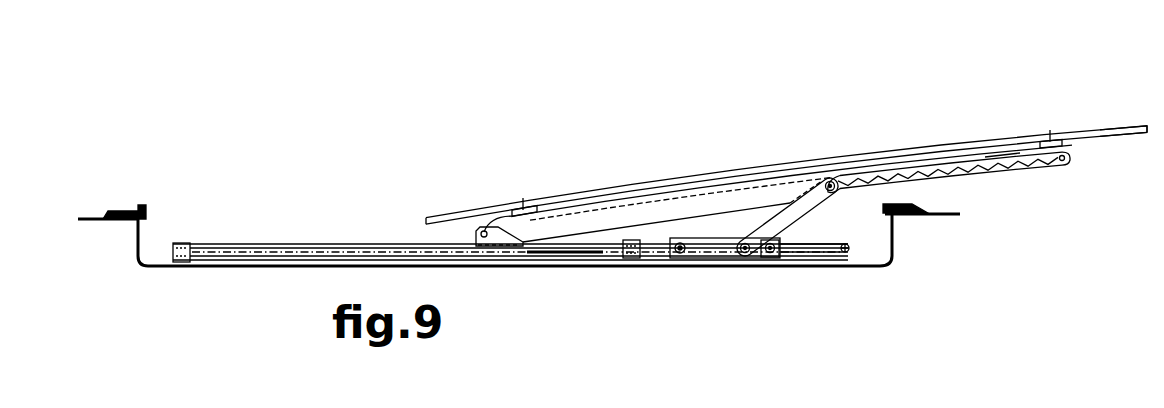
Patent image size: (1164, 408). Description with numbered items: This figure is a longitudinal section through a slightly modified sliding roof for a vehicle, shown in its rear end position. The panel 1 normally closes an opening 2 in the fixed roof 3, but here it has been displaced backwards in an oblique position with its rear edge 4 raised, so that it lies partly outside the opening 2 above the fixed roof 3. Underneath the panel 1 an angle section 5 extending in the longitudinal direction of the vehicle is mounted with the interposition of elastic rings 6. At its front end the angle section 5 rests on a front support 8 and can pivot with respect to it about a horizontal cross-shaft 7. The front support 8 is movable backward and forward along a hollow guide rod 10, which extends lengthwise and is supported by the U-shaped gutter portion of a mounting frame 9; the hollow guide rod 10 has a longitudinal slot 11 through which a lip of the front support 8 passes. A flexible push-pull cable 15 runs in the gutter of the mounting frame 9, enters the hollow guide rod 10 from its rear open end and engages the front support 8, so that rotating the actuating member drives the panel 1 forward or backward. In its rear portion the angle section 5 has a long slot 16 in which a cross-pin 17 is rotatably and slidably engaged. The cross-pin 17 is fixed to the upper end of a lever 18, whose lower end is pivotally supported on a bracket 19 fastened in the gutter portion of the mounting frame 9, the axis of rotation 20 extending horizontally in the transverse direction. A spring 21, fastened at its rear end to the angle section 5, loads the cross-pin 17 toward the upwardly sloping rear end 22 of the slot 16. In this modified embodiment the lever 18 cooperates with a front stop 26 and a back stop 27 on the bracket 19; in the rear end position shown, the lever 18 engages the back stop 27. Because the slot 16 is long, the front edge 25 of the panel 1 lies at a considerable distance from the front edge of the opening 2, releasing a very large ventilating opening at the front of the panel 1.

The panel 1 is at (447, 214).
The opening 2 is at (236, 210).
The fixed roof 3 is at (93, 217).
The rear edge 4 is at (1147, 127).
The angle section 5 is at (577, 217).
The elastic rings 6 is at (525, 207).
The horizontal cross-shaft 7 is at (483, 231).
The front support 8 is at (502, 236).
The mounting frame 9 is at (150, 266).
The hollow guide rod 10 is at (610, 253).
The longitudinal slot 11 is at (250, 250).
The push-pull cables 15 is at (650, 253).
The slot 16 is at (880, 180).
The cross-pin 17 is at (828, 182).
The lever 18 is at (797, 220).
The bracket 19 is at (712, 252).
The axis of rotation 20 is at (748, 256).
The spring 21 is at (1003, 158).
The upwardly sloping rear end 22 is at (913, 172).
The front edge 25 is at (426, 220).
The front stop 26 is at (690, 252).
The back stop 27 is at (782, 258).